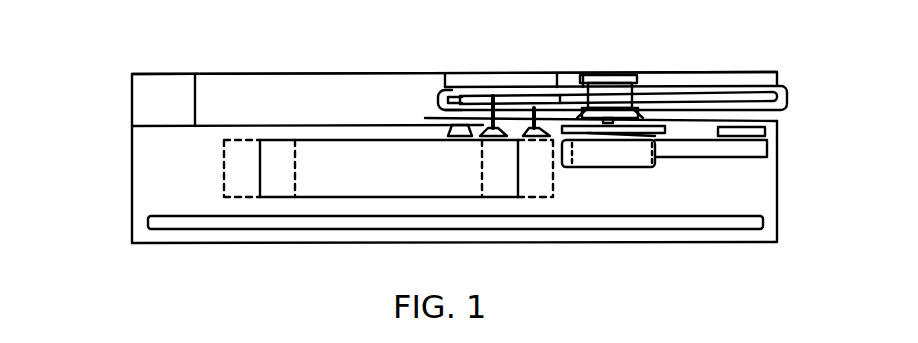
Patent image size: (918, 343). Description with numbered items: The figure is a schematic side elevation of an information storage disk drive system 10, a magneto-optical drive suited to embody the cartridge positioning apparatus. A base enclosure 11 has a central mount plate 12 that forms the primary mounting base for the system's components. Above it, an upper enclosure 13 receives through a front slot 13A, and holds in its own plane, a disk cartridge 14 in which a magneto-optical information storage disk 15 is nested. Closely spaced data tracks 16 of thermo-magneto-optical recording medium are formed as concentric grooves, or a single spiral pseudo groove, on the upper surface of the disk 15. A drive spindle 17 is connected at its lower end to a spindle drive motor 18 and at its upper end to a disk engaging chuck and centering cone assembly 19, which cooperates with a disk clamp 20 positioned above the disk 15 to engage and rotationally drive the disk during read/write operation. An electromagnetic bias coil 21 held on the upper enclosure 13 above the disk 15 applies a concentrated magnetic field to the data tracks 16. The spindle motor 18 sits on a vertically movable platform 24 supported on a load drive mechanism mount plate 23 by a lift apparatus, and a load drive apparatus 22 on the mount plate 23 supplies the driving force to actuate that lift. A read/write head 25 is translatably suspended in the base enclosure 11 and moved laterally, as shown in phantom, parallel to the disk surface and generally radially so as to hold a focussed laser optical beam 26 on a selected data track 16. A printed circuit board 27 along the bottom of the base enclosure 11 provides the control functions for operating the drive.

The information storage disk drive system 10 is at (120, 163).
The base enclosure 11 is at (132, 201).
The central mount plate 12 is at (195, 74).
The upper enclosure 13 is at (263, 73).
The front slot 13A is at (777, 72).
The disk cartridge 14 is at (437, 101).
The magneto-optical information storage disk 15 is at (480, 93).
The data tracks 16 is at (722, 95).
The drive spindle 17 is at (583, 108).
The spindle drive motor 18 is at (637, 160).
The disk engaging chuck and centering cone assembly 19 is at (640, 100).
The disk clamp 20 is at (640, 83).
The electromagnetic bias coil 21 is at (446, 87).
The load drive apparatus 22 is at (768, 129).
The load drive mechanism mount plate 23 is at (690, 160).
The vertically movable platform 24 is at (587, 134).
The read/write head 25 is at (352, 200).
The focussed laser optical beam 26 is at (514, 110).
The printed circuit board 27 is at (690, 229).